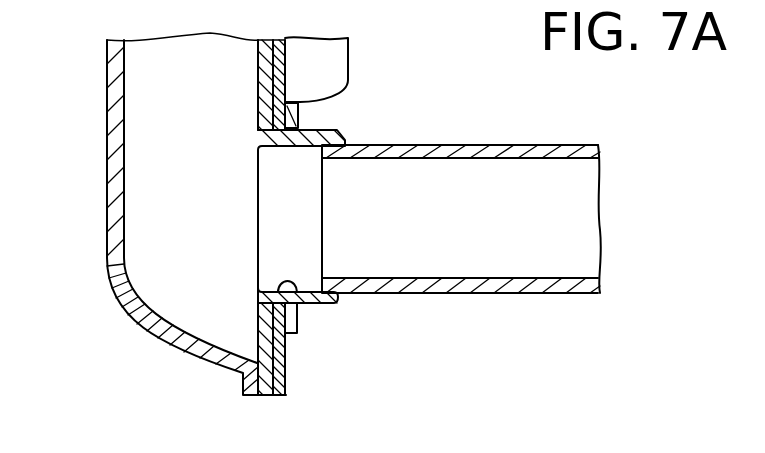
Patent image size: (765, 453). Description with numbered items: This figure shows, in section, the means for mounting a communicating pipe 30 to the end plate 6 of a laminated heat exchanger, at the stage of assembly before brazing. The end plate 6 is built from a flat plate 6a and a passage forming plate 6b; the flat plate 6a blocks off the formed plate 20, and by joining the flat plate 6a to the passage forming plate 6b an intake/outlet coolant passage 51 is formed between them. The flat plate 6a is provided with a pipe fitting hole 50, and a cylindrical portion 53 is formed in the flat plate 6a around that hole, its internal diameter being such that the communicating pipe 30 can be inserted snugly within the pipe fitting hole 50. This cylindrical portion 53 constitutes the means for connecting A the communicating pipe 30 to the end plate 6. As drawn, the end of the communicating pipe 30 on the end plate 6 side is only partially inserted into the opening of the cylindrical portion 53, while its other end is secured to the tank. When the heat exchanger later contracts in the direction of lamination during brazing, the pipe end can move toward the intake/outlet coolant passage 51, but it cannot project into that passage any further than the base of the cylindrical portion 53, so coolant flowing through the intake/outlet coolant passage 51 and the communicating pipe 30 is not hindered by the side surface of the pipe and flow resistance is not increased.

The end plate 6 is at (106, 113).
The flat plate 6a is at (265, 118).
The passage forming plate 6b is at (107, 253).
The intake/outlet coolant passage 51 is at (140, 182).
The formed plate 20 is at (290, 63).
The pipe fitting hole 50 is at (295, 304).
The cylindrical portion 53 is at (328, 305).
The means for connecting A is at (343, 301).
The communicating pipe 30 is at (527, 293).